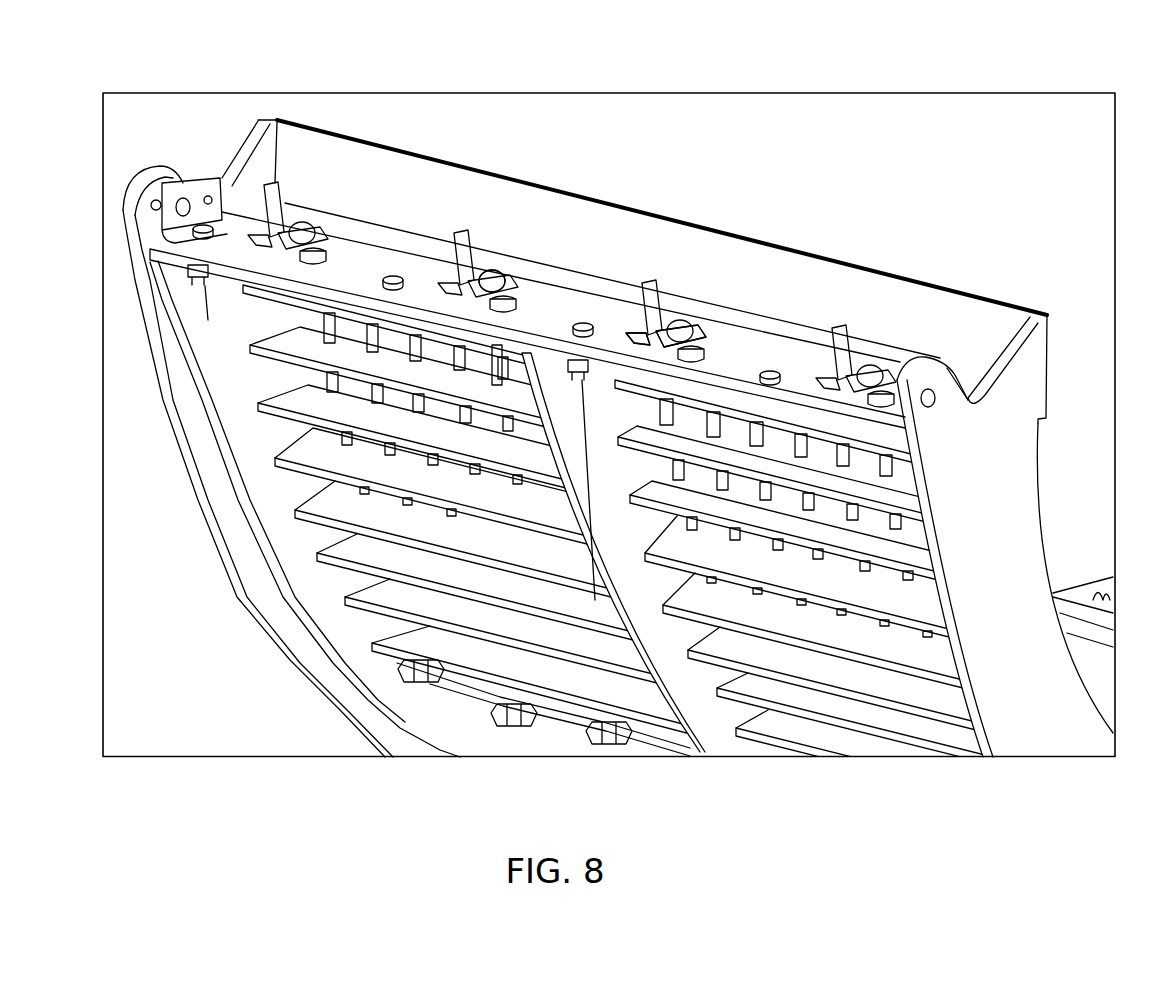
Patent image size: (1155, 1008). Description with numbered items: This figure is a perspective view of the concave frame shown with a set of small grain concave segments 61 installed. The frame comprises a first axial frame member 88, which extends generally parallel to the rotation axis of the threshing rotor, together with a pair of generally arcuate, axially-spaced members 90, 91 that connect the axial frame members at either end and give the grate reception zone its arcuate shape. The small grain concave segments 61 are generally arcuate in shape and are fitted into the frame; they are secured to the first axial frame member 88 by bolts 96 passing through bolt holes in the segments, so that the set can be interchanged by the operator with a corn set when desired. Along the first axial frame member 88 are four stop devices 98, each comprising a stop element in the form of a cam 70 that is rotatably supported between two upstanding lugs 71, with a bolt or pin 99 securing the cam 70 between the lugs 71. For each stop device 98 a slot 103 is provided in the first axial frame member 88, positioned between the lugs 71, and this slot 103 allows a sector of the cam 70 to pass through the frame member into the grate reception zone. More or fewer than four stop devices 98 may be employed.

The small grain concave segment 61 is at (365, 663).
The cam 70 is at (286, 186).
The upstanding lugs 71 is at (632, 343).
The first axial frame member 88 is at (782, 333).
The arcuate member 90 is at (1017, 442).
The arcuate member 91 is at (213, 477).
The bolts 96 is at (396, 272).
The stop device 98 is at (320, 158).
The bolt or pin 99 is at (492, 281).
The slot 103 is at (760, 360).